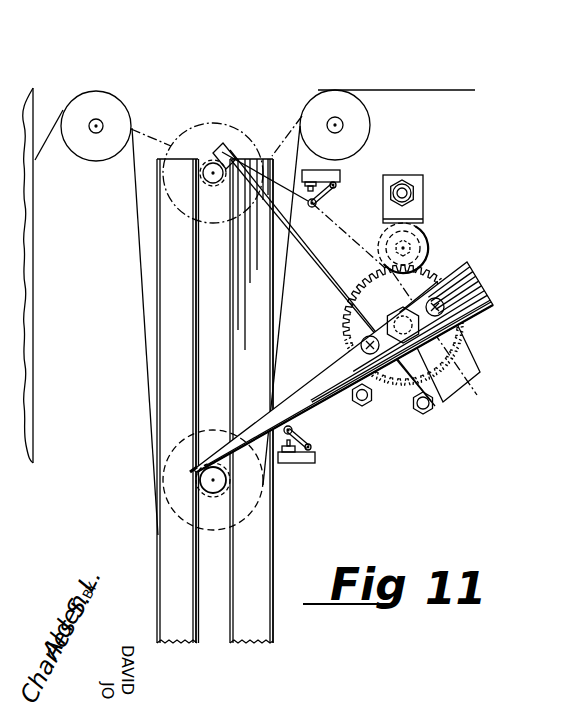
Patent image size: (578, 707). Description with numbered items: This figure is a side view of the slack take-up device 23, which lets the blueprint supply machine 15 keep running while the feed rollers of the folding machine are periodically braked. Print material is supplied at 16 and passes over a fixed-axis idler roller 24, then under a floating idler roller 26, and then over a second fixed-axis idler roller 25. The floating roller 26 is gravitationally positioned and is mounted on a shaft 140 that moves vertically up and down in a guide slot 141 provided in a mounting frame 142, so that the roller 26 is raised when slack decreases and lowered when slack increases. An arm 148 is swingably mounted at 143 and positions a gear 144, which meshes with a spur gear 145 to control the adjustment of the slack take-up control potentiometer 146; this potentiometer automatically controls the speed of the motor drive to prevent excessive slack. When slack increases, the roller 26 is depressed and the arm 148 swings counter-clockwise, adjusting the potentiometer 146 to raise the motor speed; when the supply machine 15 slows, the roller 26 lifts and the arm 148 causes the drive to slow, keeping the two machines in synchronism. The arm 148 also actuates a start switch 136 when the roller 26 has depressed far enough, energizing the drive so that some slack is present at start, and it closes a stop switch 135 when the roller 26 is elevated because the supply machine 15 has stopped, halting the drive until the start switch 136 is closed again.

The blueprint supply machine 15 is at (35, 279).
The print material supply point 16 is at (388, 89).
The slack take-up device 23 is at (128, 341).
The idler roller 24 is at (75, 138).
The idler roller 25 is at (358, 113).
The floating idler roller 26 is at (157, 492).
The stop switch 135 is at (340, 175).
The start switch 136 is at (300, 463).
The shaft 140 is at (215, 487).
The guide slot 141 is at (212, 640).
The mounting frame 142 is at (273, 317).
The swingable mounting 143 is at (458, 357).
The gear 144 is at (399, 378).
The spur gear 145 is at (428, 232).
The slack take-up control potentiometer 146 is at (380, 233).
The arm 148 is at (298, 420).